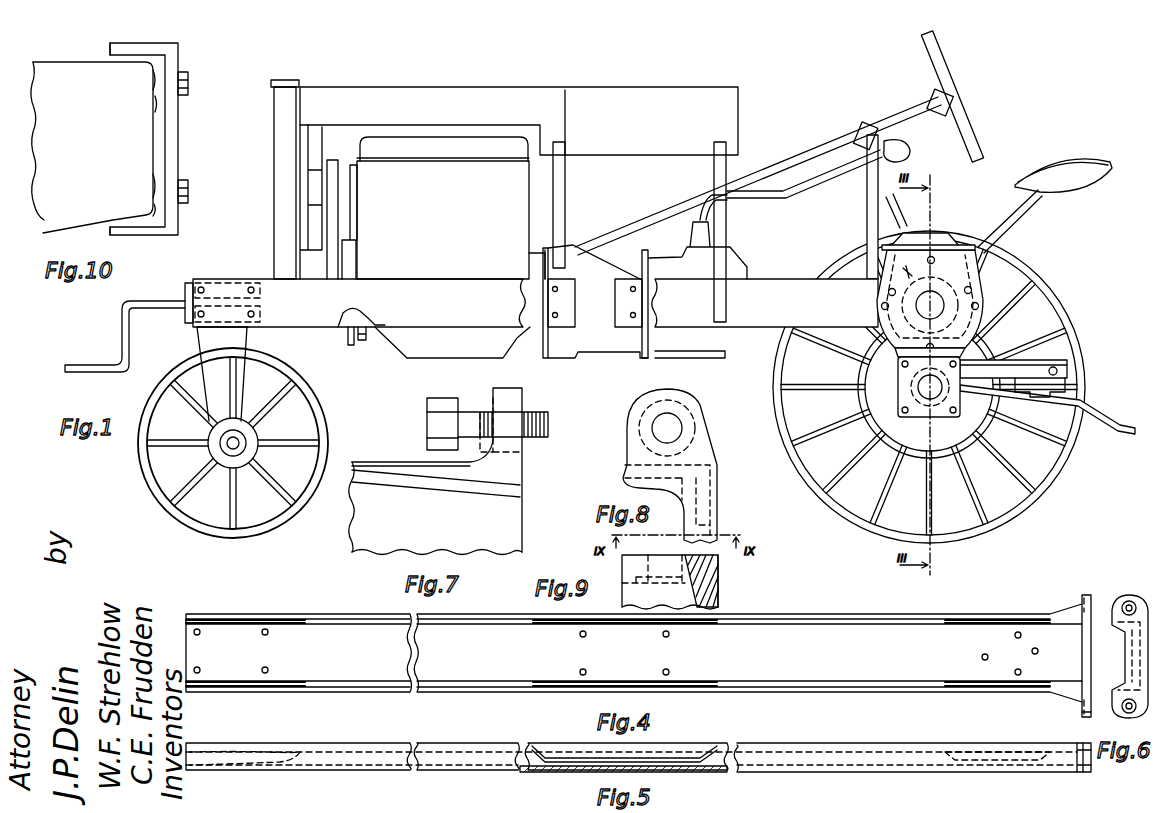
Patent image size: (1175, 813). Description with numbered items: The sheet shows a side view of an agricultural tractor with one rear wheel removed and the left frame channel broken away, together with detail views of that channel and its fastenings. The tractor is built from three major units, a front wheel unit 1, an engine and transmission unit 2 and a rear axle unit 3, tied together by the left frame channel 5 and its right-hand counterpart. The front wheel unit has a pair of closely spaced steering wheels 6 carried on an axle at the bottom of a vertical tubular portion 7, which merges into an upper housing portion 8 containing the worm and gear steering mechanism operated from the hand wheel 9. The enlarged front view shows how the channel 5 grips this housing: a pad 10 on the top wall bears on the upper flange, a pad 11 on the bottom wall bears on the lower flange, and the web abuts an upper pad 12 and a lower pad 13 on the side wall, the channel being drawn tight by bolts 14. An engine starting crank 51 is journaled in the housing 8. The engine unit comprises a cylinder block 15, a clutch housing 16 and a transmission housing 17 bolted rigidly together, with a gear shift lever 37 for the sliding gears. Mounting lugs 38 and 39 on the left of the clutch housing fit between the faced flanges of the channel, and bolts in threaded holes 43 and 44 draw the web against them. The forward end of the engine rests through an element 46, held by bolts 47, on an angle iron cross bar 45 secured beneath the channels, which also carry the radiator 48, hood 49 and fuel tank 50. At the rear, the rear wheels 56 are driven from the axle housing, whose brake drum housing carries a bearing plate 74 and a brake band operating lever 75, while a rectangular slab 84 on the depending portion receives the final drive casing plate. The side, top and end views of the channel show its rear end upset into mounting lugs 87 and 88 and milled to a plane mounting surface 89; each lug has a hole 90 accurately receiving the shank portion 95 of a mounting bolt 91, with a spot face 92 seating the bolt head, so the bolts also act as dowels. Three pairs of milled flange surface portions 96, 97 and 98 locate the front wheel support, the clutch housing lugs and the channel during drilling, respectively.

In FIG. 1, the front wheel unit 1 is at (260, 388).
In FIG. 1, the engine and transmission unit 2 is at (470, 224).
In FIG. 1, the rear axle unit 3 is at (959, 311).
In FIG. 10, the left frame channel 5 is at (179, 131).
In FIG. 1, the left frame channel 5 is at (752, 327).
In FIG. 7, the left frame channel 5 is at (353, 537).
In FIG. 4, the left frame channel 5 is at (811, 617).
In FIG. 5, the left frame channel 5 is at (638, 757).
In FIG. 1, the steering wheels 6 is at (327, 418).
In FIG. 1, the vertical tubular portion 7 is at (200, 348).
In FIG. 10, the upper housing portion 8 is at (57, 61).
In FIG. 1, the upper housing portion 8 is at (192, 290).
In FIG. 1, the hand wheel 9 is at (950, 72).
In FIG. 10, the pad 10 is at (122, 55).
In FIG. 10, the pad 11 is at (120, 226).
In FIG. 10, the upper pad 12 is at (155, 95).
In FIG. 1, the upper pad 12 is at (250, 286).
In FIG. 10, the lower pad 13 is at (155, 183).
In FIG. 1, the lower pad 13 is at (256, 315).
In FIG. 10, the bolts 14 is at (189, 80).
In FIG. 1, the bolts 14 is at (204, 287).
In FIG. 1, the cylinder block 15 is at (529, 239).
In FIG. 1, the clutch housing 16 is at (585, 358).
In FIG. 1, the transmission housing 17 is at (678, 358).
In FIG. 1, the gear shift lever 37 is at (765, 199).
In FIG. 1, the mounting lug 38 is at (565, 327).
In FIG. 1, the mounting lug 39 is at (622, 327).
In FIG. 1, the threaded hole 43 is at (558, 314).
In FIG. 1, the threaded hole 44 is at (630, 315).
In FIG. 1, the angle iron cross bar 45 is at (351, 345).
In FIG. 1, the element 46 is at (345, 322).
In FIG. 1, the bolts 47 is at (364, 340).
In FIG. 1, the radiator 48 is at (274, 190).
In FIG. 1, the hood 49 is at (455, 90).
In FIG. 1, the fuel tank 50 is at (651, 91).
In FIG. 1, the engine starting crank 51 is at (72, 364).
In FIG. 1, the rear wheels 56 is at (1058, 300).
In FIG. 1, the bearing plate 74 is at (984, 291).
In FIG. 1, the brake band operating lever 75 is at (897, 214).
In FIG. 1, the rectangular slab 84 is at (961, 397).
In FIG. 1, the mounting lug 87 is at (895, 345).
In FIG. 8, the mounting lug 87 is at (710, 448).
In FIG. 4, the mounting lug 87 is at (1087, 595).
In FIG. 1, the mounting lug 88 is at (907, 272).
In FIG. 4, the mounting lug 88 is at (1083, 712).
In FIG. 5, the mounting lug 88 is at (1088, 768).
In FIG. 7, the plane mounting surface 89 is at (523, 480).
In FIG. 4, the plane mounting surface 89 is at (1092, 612).
In FIG. 8, the hole 90 is at (681, 421).
In FIG. 7, the mounting bolt 91 is at (427, 425).
In FIG. 7, the spot face 92 is at (524, 452).
In FIG. 7, the shank portion 95 is at (470, 415).
In FIG. 4, the forward pair of surface portions 96 is at (228, 683).
In FIG. 4, the intermediate pair of surface portions 97 is at (614, 683).
In FIG. 5, the intermediate pair of surface portions 97 is at (228, 755).
In FIG. 4, the rearward pair of surface portions 98 is at (956, 683).
In FIG. 5, the rearward pair of surface portions 98 is at (982, 757).